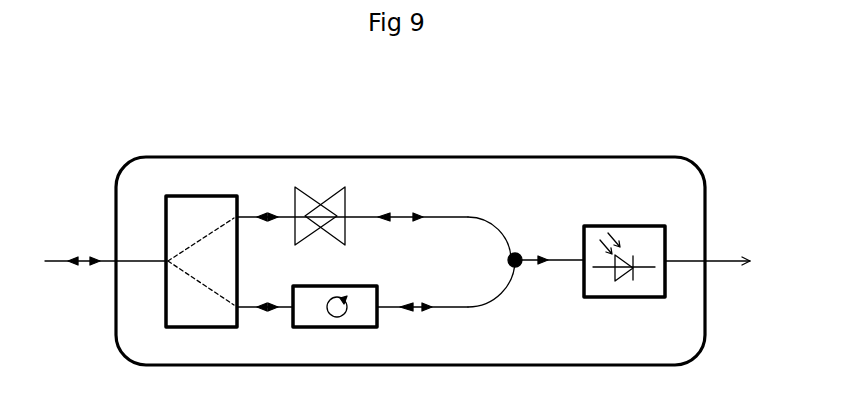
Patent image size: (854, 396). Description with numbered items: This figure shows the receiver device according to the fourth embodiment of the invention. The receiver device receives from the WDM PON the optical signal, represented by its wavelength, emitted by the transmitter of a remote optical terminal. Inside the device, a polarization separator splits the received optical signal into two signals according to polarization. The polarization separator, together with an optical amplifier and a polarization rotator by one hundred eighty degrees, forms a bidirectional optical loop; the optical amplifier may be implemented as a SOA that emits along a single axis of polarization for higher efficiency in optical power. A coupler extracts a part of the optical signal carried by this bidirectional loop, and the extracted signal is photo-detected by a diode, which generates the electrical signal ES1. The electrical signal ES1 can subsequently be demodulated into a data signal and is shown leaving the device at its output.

The electrical signal ES1 is at (707, 248).